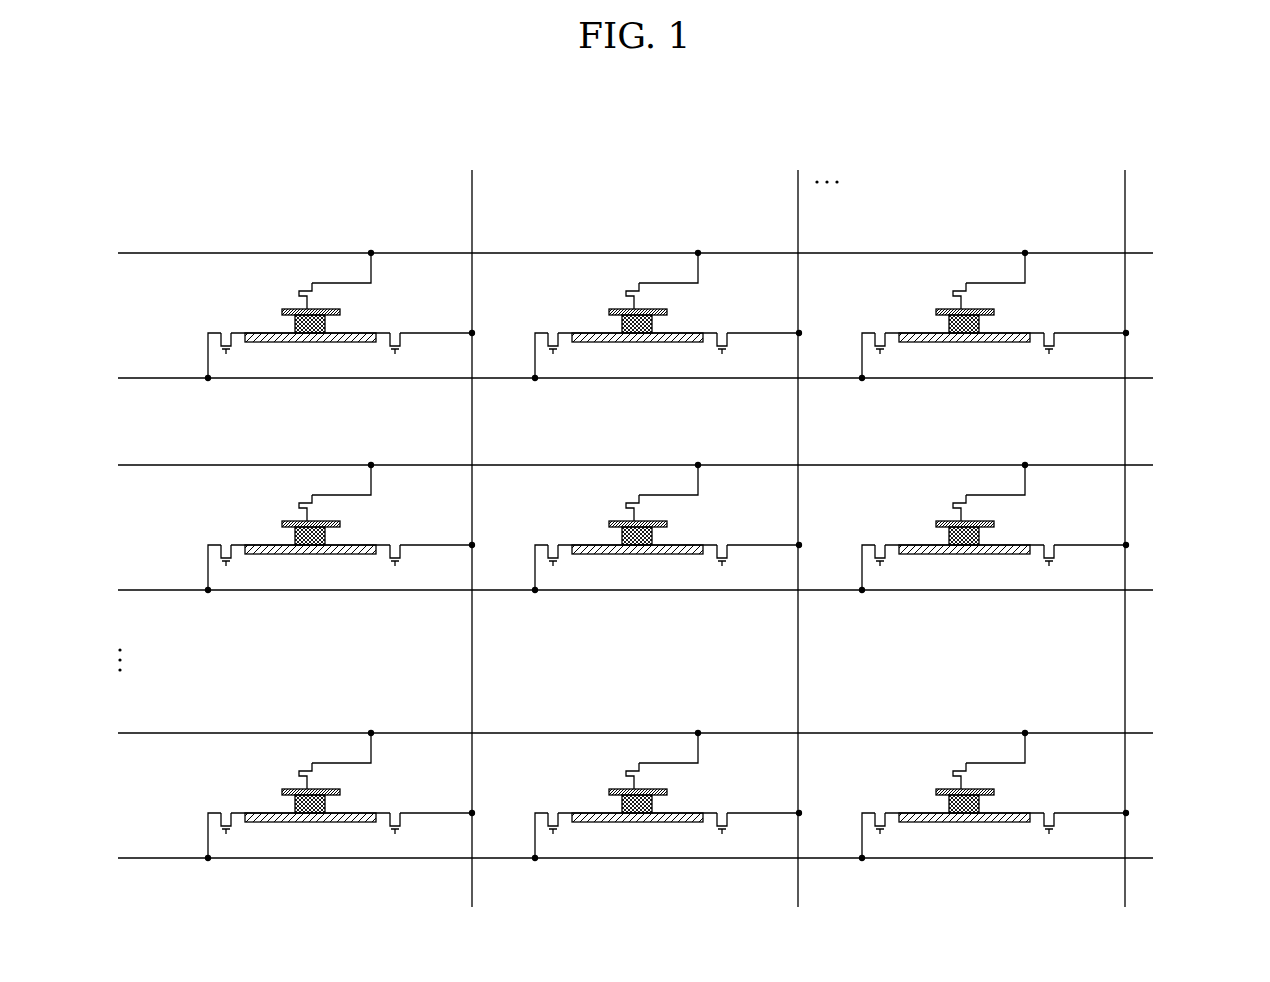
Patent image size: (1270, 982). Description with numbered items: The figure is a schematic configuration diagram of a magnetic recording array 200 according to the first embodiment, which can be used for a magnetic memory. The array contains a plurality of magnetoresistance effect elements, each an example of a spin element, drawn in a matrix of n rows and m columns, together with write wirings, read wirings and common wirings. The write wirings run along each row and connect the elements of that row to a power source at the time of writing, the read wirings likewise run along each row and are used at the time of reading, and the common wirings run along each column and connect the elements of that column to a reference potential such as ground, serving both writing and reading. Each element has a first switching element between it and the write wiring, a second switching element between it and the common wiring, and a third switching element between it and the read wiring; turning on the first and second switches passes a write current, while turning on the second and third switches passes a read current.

The magnetic recording array 200 is at (1205, 176).